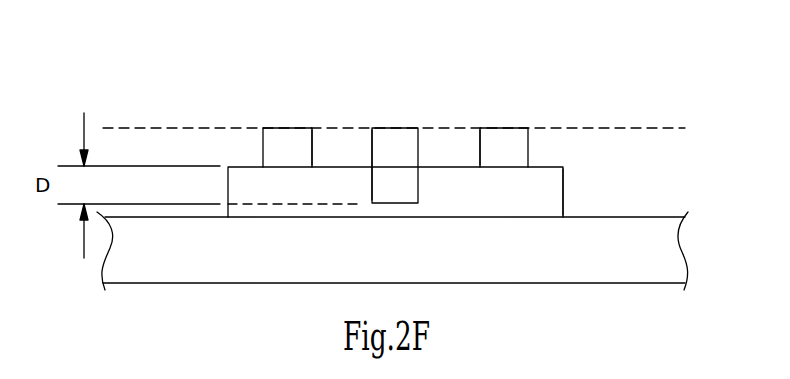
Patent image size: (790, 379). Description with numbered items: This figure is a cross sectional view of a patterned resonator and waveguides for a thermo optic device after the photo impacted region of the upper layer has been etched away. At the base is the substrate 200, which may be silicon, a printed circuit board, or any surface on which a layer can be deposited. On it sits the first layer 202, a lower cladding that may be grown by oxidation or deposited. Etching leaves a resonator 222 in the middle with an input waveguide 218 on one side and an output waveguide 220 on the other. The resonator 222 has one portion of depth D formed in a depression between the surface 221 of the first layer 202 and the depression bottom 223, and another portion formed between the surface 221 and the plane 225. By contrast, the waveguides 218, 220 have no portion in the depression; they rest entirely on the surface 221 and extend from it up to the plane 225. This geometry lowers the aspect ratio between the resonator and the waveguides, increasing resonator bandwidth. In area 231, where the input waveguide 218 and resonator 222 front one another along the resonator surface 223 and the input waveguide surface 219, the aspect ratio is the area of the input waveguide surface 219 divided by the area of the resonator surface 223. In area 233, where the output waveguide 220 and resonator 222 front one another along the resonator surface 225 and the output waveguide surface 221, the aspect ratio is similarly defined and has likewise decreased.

The substrate 200 is at (643, 226).
The first layer 202 is at (548, 193).
The input waveguide 218 is at (284, 125).
The input waveguide surface 219 is at (313, 147).
The output waveguide 220 is at (503, 125).
The surface of first layer 221 is at (480, 147).
The resonator 222 is at (394, 125).
The depression bottom 223 is at (372, 147).
The plane 225 is at (128, 128).
The area 231 is at (341, 138).
The area 233 is at (452, 138).